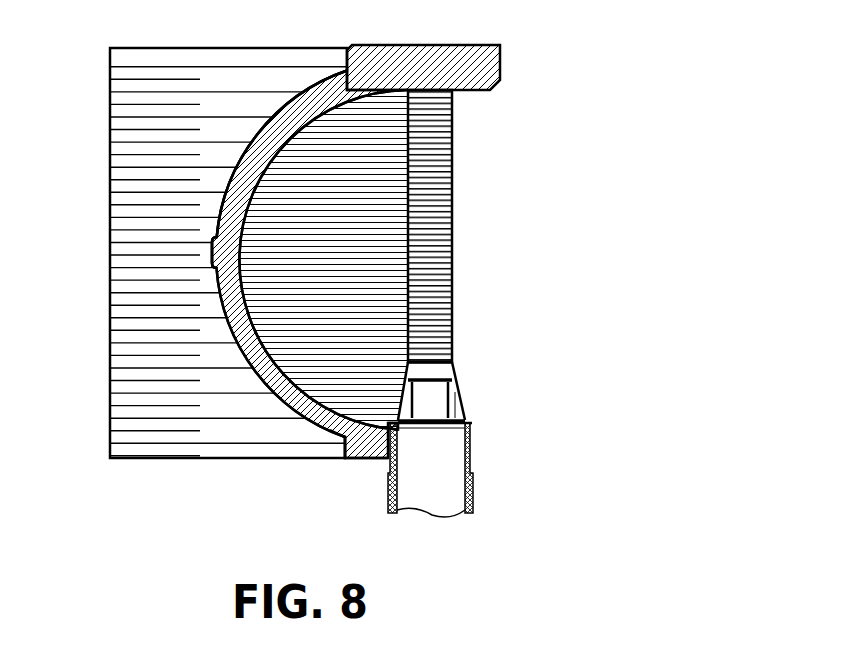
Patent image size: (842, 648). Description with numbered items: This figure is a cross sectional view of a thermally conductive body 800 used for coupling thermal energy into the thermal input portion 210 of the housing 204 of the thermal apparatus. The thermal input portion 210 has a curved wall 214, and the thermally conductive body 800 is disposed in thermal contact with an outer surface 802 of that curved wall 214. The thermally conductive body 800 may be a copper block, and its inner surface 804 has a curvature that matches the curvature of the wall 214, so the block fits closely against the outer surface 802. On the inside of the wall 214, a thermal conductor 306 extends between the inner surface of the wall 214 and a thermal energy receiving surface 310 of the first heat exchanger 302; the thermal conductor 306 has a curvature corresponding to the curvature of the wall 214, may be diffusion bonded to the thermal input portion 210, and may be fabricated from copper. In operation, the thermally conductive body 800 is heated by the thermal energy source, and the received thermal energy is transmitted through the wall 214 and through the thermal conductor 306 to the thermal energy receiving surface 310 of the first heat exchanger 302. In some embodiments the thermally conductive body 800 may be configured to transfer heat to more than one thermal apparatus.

The thermally conductive body 800 is at (127, 233).
The thermal input portion 210 is at (236, 135).
The outer surface 802 is at (280, 113).
The inner surface 804 is at (246, 350).
The wall 214 is at (298, 393).
The thermal conductor 306 is at (357, 142).
The housing 204 is at (431, 62).
The first heat exchanger 302 is at (437, 285).
The thermal energy receiving surface 310 is at (400, 384).